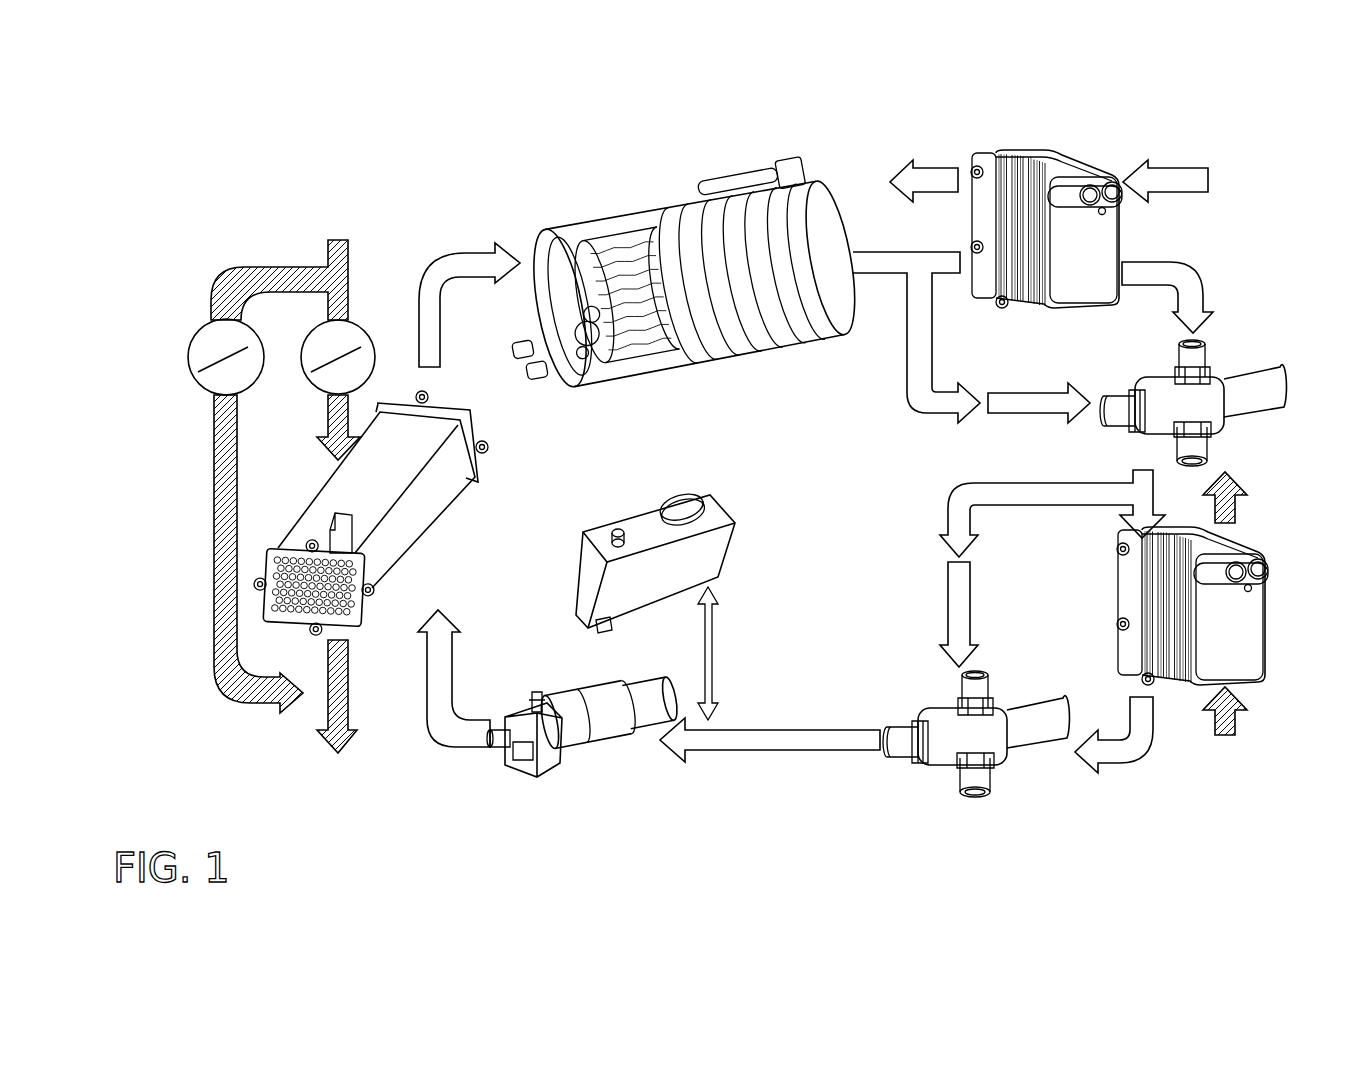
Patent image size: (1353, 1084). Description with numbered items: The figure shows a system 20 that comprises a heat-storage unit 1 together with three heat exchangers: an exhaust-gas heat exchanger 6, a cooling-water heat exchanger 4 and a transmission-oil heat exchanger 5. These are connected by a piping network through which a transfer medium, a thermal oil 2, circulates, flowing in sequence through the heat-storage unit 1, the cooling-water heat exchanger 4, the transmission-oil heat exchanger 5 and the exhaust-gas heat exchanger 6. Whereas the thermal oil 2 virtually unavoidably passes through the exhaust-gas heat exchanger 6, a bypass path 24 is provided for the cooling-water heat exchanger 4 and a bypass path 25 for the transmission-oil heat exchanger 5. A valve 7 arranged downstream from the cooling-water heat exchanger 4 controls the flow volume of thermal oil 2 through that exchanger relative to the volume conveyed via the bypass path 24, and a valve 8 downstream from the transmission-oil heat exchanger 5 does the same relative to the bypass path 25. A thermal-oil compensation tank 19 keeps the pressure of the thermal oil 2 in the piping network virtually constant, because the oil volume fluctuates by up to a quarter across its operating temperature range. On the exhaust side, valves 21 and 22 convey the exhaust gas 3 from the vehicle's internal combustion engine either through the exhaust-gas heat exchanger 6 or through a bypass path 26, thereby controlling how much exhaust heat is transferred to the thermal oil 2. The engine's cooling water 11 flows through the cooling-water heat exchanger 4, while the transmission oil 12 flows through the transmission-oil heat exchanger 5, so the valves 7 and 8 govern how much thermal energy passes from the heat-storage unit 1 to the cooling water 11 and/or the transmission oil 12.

The heat-storage unit 1 is at (652, 218).
The thermal oil 2 is at (432, 333).
The exhaust gas 3 is at (248, 285).
The cooling-water heat exchanger 4 is at (1030, 162).
The transmission-oil heat exchanger 5 is at (1263, 620).
The exhaust-gas heat exchanger 6 is at (430, 515).
The valve 7 is at (1213, 382).
The valve 8 is at (995, 715).
The cooling water 11 is at (935, 178).
The transmission oil 12 is at (1228, 510).
The thermal-oil compensation tank 19 is at (718, 513).
The system 20 is at (260, 748).
The valve 21 is at (188, 352).
The valve 22 is at (362, 328).
The bypass path 24 is at (921, 390).
The bypass path 25 is at (963, 505).
The bypass path 26 is at (217, 488).